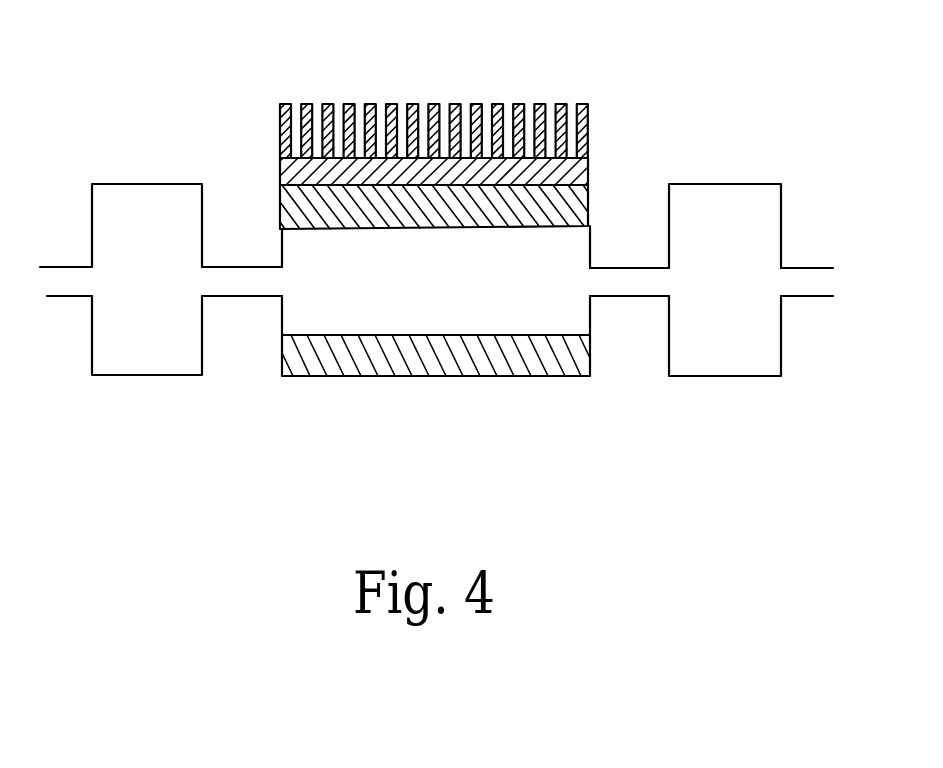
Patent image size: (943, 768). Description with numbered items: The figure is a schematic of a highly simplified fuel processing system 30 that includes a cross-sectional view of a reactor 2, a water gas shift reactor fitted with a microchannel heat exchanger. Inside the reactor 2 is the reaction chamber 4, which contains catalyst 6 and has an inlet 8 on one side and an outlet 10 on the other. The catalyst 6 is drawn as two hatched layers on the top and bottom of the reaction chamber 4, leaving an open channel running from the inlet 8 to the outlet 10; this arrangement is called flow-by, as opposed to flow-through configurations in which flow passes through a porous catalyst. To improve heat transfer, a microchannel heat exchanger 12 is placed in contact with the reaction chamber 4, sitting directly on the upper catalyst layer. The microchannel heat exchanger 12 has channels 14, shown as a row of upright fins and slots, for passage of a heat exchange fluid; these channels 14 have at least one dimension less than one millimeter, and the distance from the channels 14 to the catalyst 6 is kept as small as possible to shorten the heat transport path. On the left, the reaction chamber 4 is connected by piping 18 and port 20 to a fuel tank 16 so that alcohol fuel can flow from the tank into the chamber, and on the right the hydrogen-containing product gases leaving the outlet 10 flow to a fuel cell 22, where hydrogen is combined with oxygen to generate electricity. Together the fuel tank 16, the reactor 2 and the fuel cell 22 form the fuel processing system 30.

The reactor 2 is at (543, 388).
The reaction chamber 4 is at (349, 316).
The catalyst 6 is at (583, 192).
The inlet 8 is at (283, 282).
The outlet 10 is at (598, 288).
The microchannel heat exchanger 12 is at (279, 156).
The channels 14 is at (400, 118).
The fuel tank 16 is at (125, 205).
The inlet conduit 18 is at (48, 287).
The left inlet port 20 is at (200, 277).
The fuel cell 22 is at (688, 362).
The fuel processing system 30 is at (270, 427).